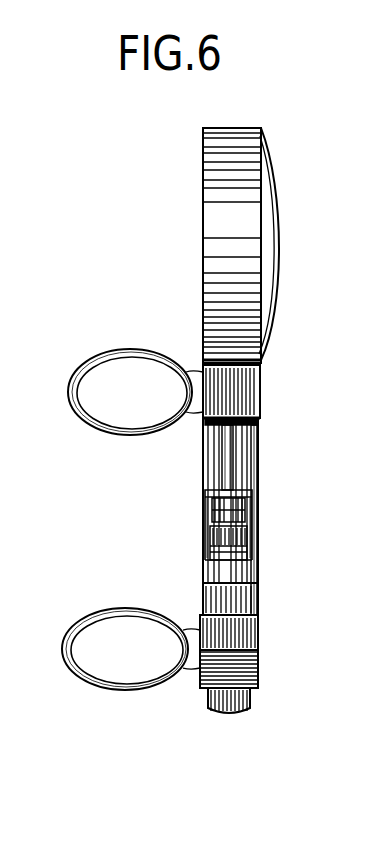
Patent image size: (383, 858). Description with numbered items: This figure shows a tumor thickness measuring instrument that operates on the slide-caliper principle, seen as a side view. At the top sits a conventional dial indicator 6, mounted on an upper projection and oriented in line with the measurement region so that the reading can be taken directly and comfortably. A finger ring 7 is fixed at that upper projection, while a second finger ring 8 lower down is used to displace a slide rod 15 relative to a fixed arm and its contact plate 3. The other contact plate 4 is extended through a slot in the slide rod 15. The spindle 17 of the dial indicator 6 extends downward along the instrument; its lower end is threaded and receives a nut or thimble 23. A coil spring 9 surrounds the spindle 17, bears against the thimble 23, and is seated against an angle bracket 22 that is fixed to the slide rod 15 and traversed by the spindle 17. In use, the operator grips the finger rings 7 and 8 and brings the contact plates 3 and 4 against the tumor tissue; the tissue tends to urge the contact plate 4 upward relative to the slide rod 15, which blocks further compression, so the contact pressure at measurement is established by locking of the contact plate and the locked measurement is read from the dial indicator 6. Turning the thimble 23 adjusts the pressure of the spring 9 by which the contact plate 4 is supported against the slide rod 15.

The contact plate 3 is at (205, 590).
The contact plate 4 is at (247, 550).
The dial indicator 6 is at (221, 223).
The finger ring 7 is at (131, 352).
The finger ring 8 is at (118, 609).
The spring 9 is at (208, 507).
The slide rod 15 is at (212, 700).
The spindle 17 is at (229, 463).
The angle bracket 22 is at (210, 493).
The thimble 23 is at (212, 537).